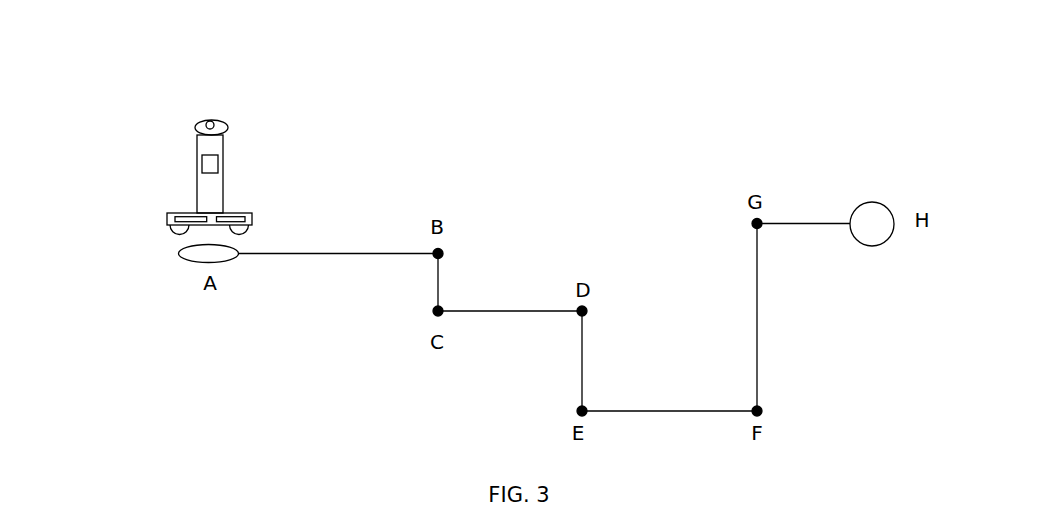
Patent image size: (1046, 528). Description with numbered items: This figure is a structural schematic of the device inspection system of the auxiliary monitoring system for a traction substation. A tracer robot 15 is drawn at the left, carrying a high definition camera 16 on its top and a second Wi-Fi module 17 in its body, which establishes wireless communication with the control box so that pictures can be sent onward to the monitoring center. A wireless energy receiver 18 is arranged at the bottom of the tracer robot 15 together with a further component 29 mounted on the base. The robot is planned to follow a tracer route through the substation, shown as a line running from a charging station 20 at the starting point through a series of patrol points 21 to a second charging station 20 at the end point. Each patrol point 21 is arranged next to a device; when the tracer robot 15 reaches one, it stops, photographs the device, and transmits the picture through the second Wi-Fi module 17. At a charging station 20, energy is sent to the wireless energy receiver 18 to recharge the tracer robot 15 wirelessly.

The tracer robot 15 is at (197, 127).
The high definition (HD) camera 16 is at (210, 126).
The second Wi-Fi module 17 is at (208, 165).
The wireless energy receiver 18 is at (242, 218).
The obstacle sensor 29 is at (178, 218).
The charging station 20 is at (182, 262).
The patrol point 21 is at (445, 245).